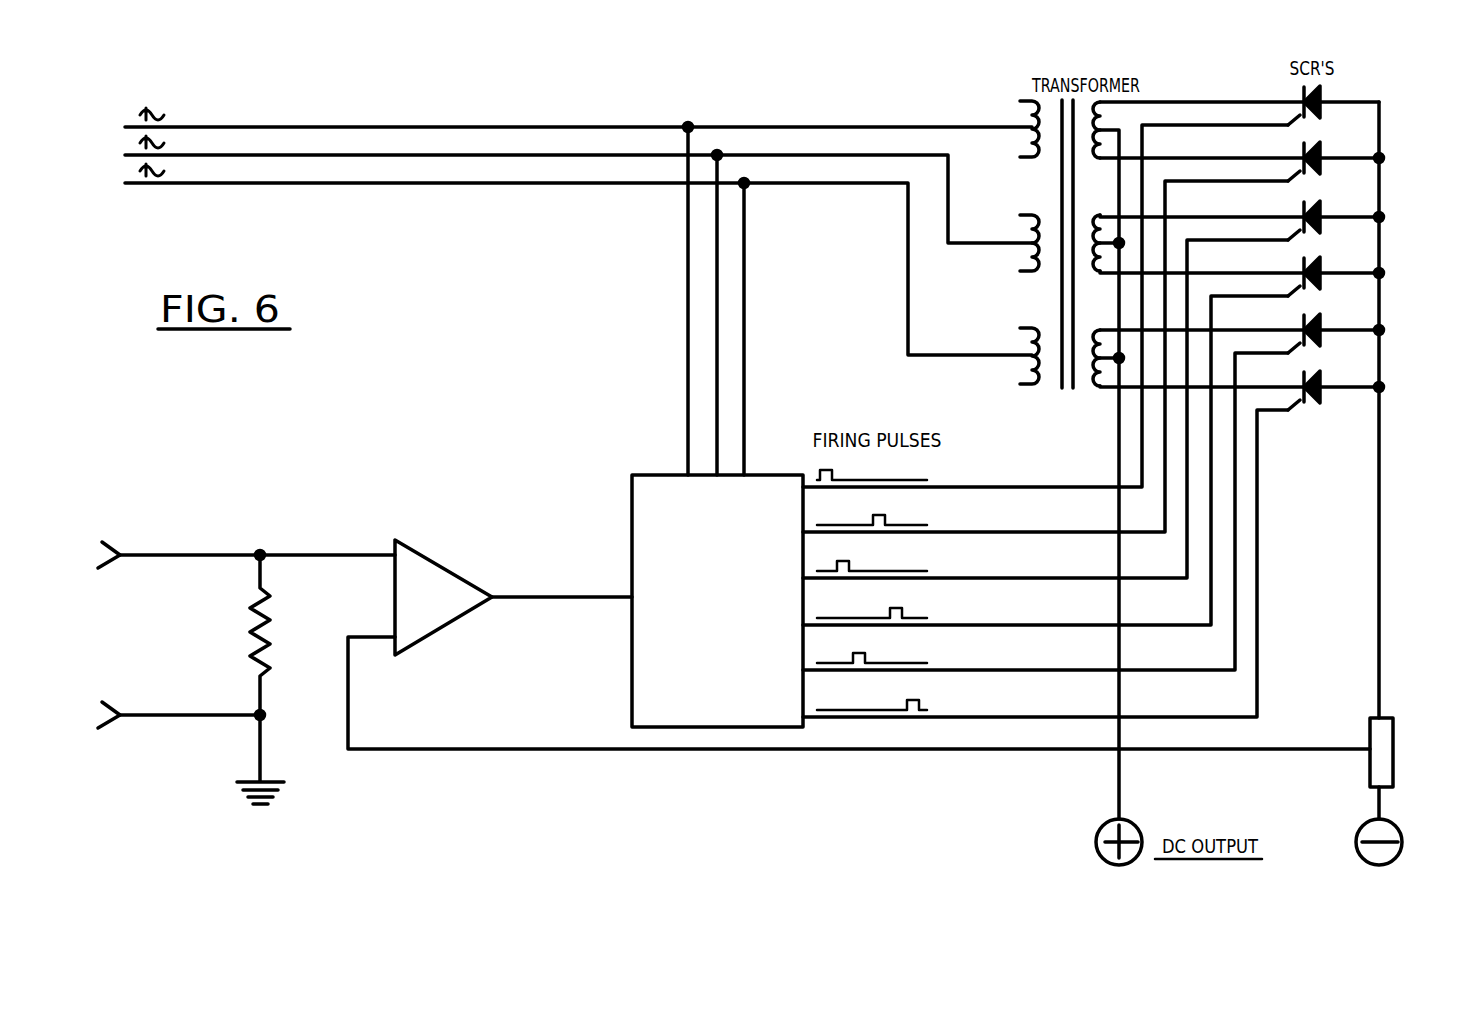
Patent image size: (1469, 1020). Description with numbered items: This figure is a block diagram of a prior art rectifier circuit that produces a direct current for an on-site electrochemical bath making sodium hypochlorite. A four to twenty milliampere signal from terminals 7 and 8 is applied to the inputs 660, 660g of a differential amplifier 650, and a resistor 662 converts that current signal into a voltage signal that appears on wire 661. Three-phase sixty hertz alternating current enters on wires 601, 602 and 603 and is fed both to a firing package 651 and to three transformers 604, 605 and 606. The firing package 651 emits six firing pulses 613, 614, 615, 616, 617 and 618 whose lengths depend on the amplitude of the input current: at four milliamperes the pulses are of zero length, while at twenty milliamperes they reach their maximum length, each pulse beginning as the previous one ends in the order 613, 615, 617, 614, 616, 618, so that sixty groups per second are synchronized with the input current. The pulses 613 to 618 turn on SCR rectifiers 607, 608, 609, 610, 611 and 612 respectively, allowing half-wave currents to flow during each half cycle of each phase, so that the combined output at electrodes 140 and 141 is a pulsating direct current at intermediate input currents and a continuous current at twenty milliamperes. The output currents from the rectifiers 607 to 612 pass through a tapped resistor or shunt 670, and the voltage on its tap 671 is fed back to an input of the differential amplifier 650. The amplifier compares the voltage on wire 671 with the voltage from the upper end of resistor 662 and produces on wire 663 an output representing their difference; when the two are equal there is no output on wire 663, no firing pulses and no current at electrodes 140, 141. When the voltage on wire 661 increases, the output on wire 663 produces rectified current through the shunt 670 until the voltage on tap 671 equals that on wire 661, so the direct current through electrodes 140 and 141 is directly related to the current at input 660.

The wire 601 is at (215, 127).
The wire 602 is at (283, 155).
The wire 603 is at (367, 183).
The transformer 604 is at (1030, 115).
The transformer 605 is at (1032, 227).
The transformer 606 is at (1032, 343).
The SCR rectifier 607 is at (1320, 87).
The SCR rectifier 608 is at (1320, 143).
The SCR rectifier 609 is at (1320, 200).
The SCR rectifier 610 is at (1320, 256).
The SCR rectifier 611 is at (1320, 313).
The SCR rectifier 612 is at (1320, 370).
The firing pulse 613 is at (852, 480).
The firing pulse 614 is at (904, 520).
The firing pulse 615 is at (869, 571).
The firing pulse 616 is at (919, 615).
The firing pulse 617 is at (879, 661).
The firing pulse 618 is at (924, 708).
The differential amplifier 650 is at (460, 573).
The firing package 651 is at (642, 473).
The input wire 660 is at (102, 542).
The input 660g is at (102, 702).
The wire 661 is at (320, 555).
The resistor 662 is at (268, 645).
The wire 663 is at (533, 603).
The tapped resistor (shunt) 670 is at (1393, 718).
The tap 671 is at (1260, 749).
The electrode 140 is at (1101, 857).
The electrode 141 is at (1398, 856).
The terminal 7 is at (132, 575).
The terminal 8 is at (132, 733).